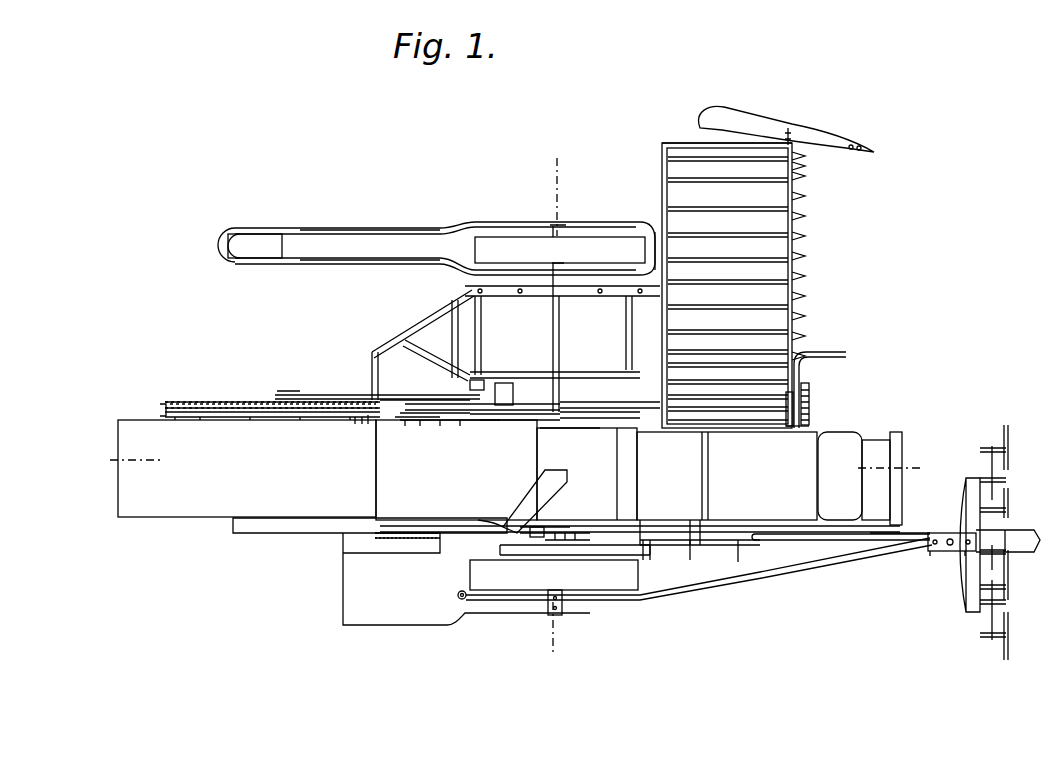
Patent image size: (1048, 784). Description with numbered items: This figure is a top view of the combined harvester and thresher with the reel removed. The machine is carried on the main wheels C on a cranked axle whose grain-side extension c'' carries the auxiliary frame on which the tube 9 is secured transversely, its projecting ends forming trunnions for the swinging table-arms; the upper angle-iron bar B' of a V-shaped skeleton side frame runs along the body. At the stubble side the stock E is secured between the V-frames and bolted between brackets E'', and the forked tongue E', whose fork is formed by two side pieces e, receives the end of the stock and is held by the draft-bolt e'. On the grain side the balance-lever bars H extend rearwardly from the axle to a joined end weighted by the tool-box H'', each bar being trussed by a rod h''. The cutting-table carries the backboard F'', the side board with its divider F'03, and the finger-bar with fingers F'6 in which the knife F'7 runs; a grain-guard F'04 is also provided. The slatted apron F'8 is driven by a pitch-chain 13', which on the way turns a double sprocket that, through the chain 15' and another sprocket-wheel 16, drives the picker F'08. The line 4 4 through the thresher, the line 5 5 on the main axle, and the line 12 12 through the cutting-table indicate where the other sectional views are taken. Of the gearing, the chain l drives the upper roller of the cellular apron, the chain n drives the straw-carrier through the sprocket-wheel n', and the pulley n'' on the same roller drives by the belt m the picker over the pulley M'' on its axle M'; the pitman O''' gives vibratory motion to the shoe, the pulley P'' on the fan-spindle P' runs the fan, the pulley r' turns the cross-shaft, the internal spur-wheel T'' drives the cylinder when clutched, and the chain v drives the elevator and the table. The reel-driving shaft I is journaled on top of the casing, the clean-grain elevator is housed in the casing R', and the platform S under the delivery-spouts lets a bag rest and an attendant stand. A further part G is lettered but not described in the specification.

The slatted apron F'8 is at (727, 285).
The backboard F'' is at (727, 125).
The divider F'03 is at (786, 117).
The bevel-wheels 12 is at (761, 349).
The knife F'7 is at (815, 256).
The fingers F'6 is at (814, 159).
The grain-guard F'04 is at (826, 348).
The picker F'08 is at (827, 393).
The sprocket-wheel 16 is at (810, 388).
The pitch-chain 13' is at (817, 409).
The chain 15' is at (817, 422).
The bar H is at (436, 235).
The tool-box H'' is at (255, 227).
The rod h'' is at (370, 246).
The section line 5 5 is at (554, 413).
The main wheels C is at (557, 407).
The tube 9 is at (562, 332).
The chain l is at (410, 402).
The axle extension c'' is at (574, 354).
The post G is at (628, 340).
The chain n is at (272, 390).
The sprocket-wheel n' is at (272, 394).
The pulley n'' is at (154, 408).
The belt m is at (233, 416).
The pitman O''' is at (377, 382).
The pulley M'' is at (349, 430).
The picker axle M' is at (361, 437).
The pulley P'' is at (456, 466).
The fan-spindle P' is at (417, 432).
The pulley r' is at (477, 434).
The chain v is at (570, 442).
The reel-driving shaft I is at (708, 480).
The section line 4 4 is at (509, 465).
The casing R' is at (370, 512).
The internal spur-wheel T'' is at (575, 522).
The platform S is at (466, 579).
The angle-iron bar B' is at (659, 559).
The brackets E'' is at (841, 565).
The stock E is at (875, 564).
The draft-bolt e' is at (951, 557).
The side pieces e is at (1008, 525).
The tongue E' is at (995, 542).